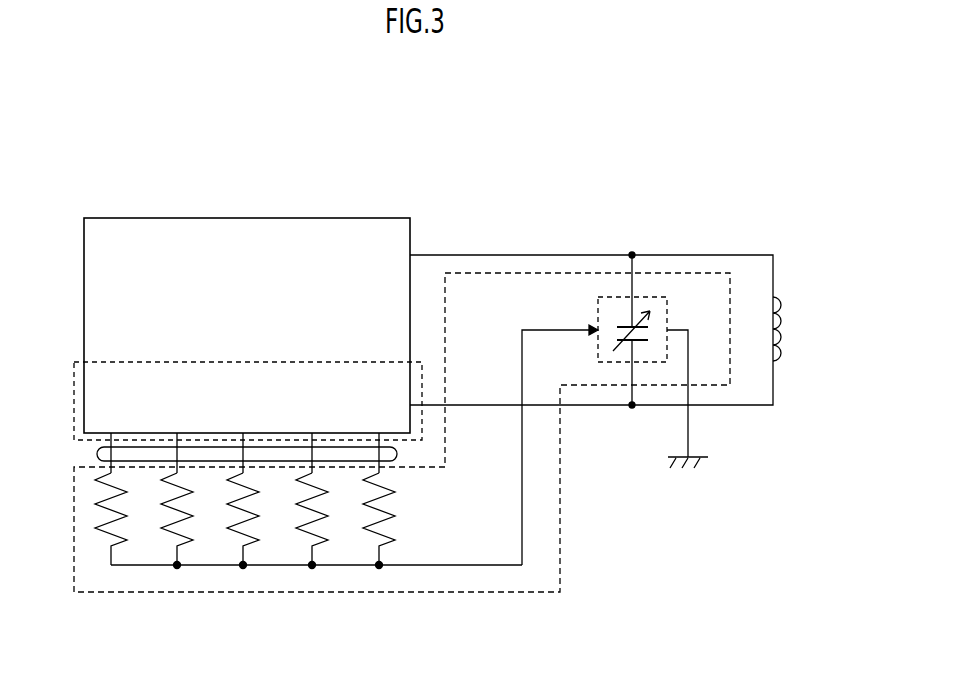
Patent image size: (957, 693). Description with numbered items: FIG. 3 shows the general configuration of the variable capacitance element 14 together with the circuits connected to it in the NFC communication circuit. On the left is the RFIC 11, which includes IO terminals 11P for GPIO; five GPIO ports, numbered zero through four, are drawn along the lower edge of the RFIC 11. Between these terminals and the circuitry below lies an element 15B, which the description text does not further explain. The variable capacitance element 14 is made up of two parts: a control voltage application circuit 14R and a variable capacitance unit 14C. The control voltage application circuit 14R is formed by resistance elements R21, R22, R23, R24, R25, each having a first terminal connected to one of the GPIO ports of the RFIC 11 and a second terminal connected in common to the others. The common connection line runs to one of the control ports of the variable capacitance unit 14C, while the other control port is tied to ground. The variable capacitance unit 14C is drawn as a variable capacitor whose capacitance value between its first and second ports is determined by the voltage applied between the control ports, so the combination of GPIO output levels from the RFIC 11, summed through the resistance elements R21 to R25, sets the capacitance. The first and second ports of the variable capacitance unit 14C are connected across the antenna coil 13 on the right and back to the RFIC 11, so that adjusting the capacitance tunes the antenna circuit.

The RFIC 11 is at (410, 218).
The IO terminals 11P is at (77, 372).
The connector 15B is at (97, 453).
The variable capacitance element 14 is at (732, 270).
The variable capacitance unit 14C is at (597, 296).
The control voltage application circuit 14R is at (293, 566).
The resistance element R21 is at (127, 541).
The resistance element R22 is at (193, 541).
The resistance element R23 is at (259, 541).
The resistance element R24 is at (328, 541).
The resistance element R25 is at (395, 541).
The antenna coil 13 is at (786, 320).